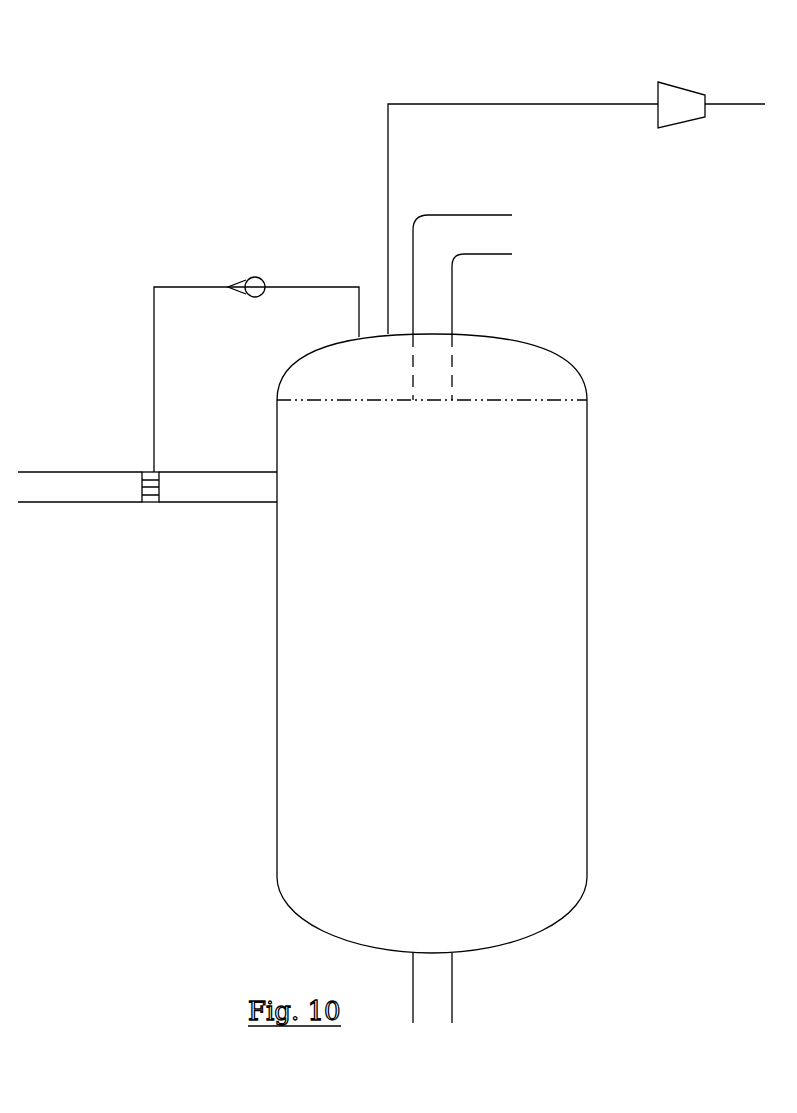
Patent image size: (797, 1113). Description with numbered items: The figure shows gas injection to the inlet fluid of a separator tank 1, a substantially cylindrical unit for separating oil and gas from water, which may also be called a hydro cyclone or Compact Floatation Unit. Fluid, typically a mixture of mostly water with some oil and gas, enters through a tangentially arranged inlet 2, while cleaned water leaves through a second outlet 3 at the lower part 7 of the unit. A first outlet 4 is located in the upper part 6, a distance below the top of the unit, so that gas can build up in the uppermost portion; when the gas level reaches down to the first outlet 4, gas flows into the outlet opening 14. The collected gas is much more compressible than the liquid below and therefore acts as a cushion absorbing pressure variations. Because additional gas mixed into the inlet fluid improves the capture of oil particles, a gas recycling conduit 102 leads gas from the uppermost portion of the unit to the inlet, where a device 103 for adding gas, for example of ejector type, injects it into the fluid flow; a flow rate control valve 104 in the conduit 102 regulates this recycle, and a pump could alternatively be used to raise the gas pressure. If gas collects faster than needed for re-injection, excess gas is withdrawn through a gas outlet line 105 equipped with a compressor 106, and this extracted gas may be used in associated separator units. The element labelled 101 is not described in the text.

The separator tank 1 is at (458, 621).
The inlet 2 is at (100, 488).
The second outlet 3 is at (443, 1008).
The first outlet 4 is at (478, 232).
The upper part 6 is at (490, 437).
The lower part 7 is at (558, 859).
The outlet opening 14 is at (427, 401).
The vessel head 101 is at (375, 368).
The gas recycling conduit 102 is at (180, 287).
The device for adding gas 103 is at (145, 503).
The flow rate control valve 104 is at (257, 285).
The gas outlet line 105 is at (455, 104).
The compressor 106 is at (680, 108).